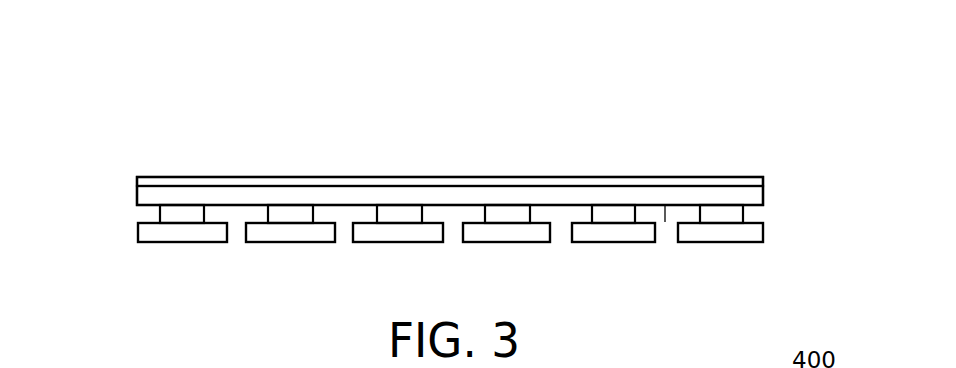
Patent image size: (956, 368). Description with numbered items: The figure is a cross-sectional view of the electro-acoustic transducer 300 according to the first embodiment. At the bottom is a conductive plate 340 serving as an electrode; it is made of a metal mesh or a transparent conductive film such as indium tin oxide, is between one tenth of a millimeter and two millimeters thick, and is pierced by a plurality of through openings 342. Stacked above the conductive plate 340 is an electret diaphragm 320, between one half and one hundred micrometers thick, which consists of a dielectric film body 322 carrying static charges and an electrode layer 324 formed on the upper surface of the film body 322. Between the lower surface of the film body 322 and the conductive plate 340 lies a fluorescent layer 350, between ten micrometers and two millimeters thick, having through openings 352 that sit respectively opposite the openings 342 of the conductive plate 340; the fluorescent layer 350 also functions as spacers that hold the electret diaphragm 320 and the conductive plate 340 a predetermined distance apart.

The electro-acoustic transducer 300 is at (760, 132).
The electret diaphragm 320 is at (135, 195).
The film body 322 is at (760, 200).
The electrode layer 324 is at (760, 182).
The conductive plate 340 is at (176, 233).
The through openings 342 is at (343, 230).
The fluorescent layer 350 is at (742, 216).
The through openings 352 is at (665, 213).